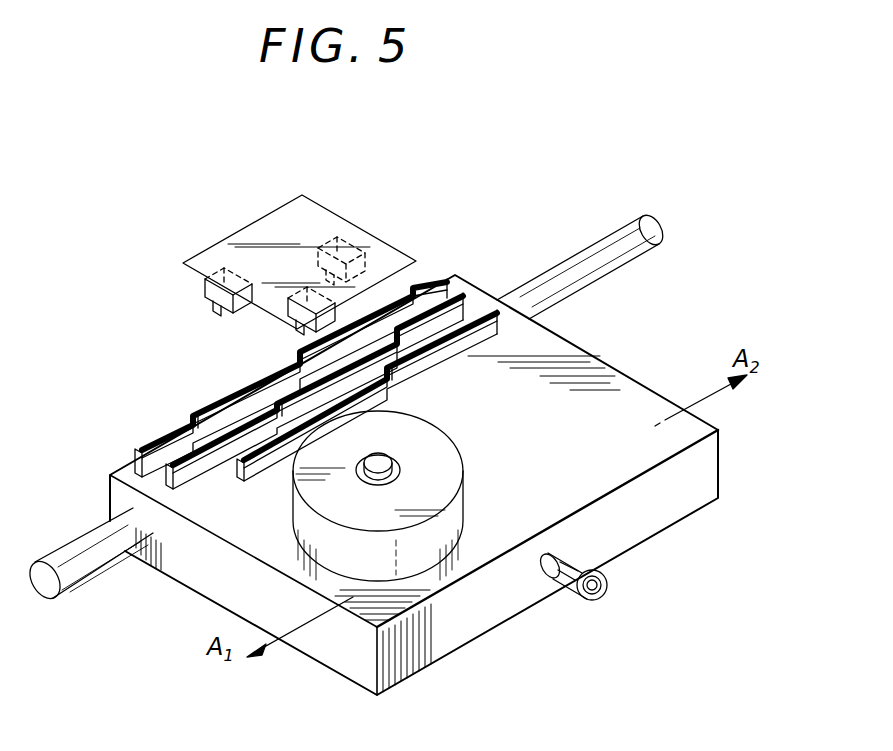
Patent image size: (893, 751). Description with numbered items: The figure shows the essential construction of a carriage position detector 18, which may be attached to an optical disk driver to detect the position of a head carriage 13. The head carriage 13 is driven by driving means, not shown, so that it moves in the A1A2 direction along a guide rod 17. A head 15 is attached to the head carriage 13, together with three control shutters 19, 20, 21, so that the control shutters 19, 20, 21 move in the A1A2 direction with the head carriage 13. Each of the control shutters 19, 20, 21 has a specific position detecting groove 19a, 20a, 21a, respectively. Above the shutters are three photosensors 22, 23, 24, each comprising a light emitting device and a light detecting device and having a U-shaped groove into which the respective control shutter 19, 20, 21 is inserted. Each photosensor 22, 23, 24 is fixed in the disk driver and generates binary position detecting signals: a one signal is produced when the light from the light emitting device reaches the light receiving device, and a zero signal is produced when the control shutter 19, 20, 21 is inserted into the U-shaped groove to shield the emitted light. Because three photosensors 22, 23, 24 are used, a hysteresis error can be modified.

The head carriage 13 is at (622, 394).
The head 15 is at (440, 478).
The guide rod 17 is at (88, 553).
The carriage position detector 18 is at (467, 169).
The control shutter 19 is at (279, 348).
The position detecting groove 19a is at (192, 422).
The control shutter 20 is at (314, 436).
The position detecting groove 20a is at (280, 377).
The control shutter 21 is at (363, 418).
The position detecting groove 21a is at (392, 400).
The photosensor 22 is at (203, 293).
The photosensor 23 is at (340, 246).
The photosensor 24 is at (303, 292).